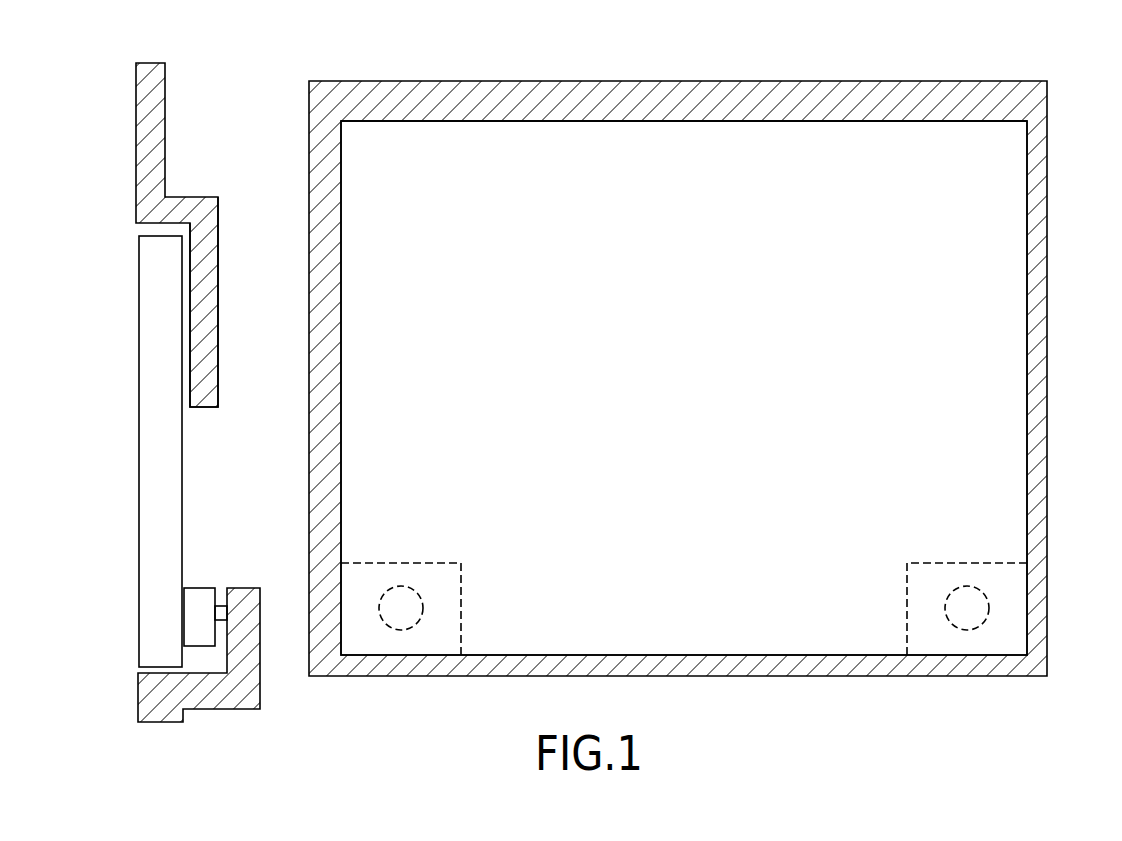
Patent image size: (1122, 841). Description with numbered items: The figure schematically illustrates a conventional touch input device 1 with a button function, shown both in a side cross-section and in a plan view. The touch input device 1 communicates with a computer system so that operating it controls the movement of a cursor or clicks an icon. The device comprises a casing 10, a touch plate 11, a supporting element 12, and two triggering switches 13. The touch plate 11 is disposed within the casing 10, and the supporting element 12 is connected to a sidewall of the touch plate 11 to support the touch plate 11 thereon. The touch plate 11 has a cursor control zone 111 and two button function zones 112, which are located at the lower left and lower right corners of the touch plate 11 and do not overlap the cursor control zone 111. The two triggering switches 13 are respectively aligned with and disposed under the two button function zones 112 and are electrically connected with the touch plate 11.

The touch input device 1 is at (833, 52).
The casing 10 is at (148, 135).
The touch plate 11 is at (165, 465).
The supporting element 12 is at (200, 330).
The triggering switch 13 is at (200, 600).
The cursor control zone 111 is at (868, 145).
The button function zone 112 is at (443, 626).